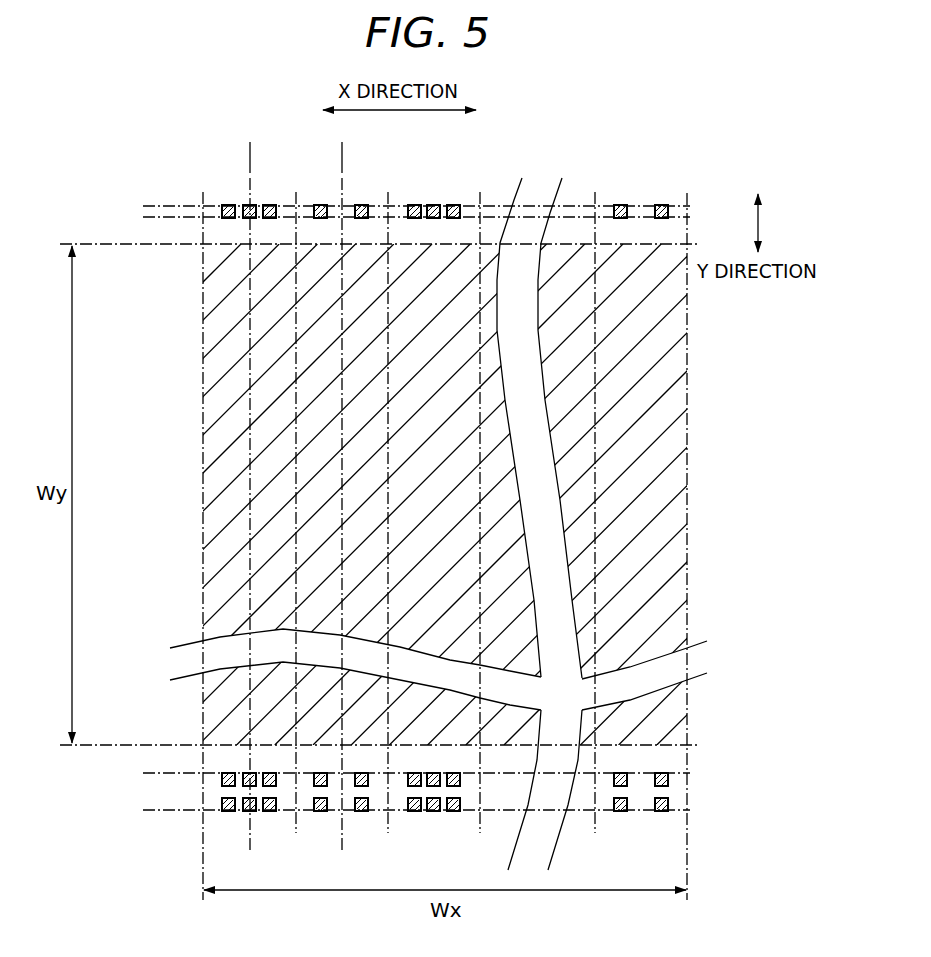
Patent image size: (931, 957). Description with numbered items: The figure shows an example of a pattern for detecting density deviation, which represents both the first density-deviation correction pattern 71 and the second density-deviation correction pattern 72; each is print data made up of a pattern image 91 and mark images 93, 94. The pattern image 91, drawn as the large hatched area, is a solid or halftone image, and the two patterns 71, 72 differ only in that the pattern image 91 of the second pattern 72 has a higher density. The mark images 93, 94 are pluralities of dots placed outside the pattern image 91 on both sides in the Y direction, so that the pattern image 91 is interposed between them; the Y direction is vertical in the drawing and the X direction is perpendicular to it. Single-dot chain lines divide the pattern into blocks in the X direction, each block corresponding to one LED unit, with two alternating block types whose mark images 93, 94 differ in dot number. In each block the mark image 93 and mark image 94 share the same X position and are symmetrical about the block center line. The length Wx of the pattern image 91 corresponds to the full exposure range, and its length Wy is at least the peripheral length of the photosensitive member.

The first density-deviation correction pattern 71 is at (438, 474).
The second density-deviation correction pattern 72 is at (438, 669).
The pattern image 91 is at (148, 245).
The mark image 93 is at (142, 204).
The mark image 94 is at (147, 772).